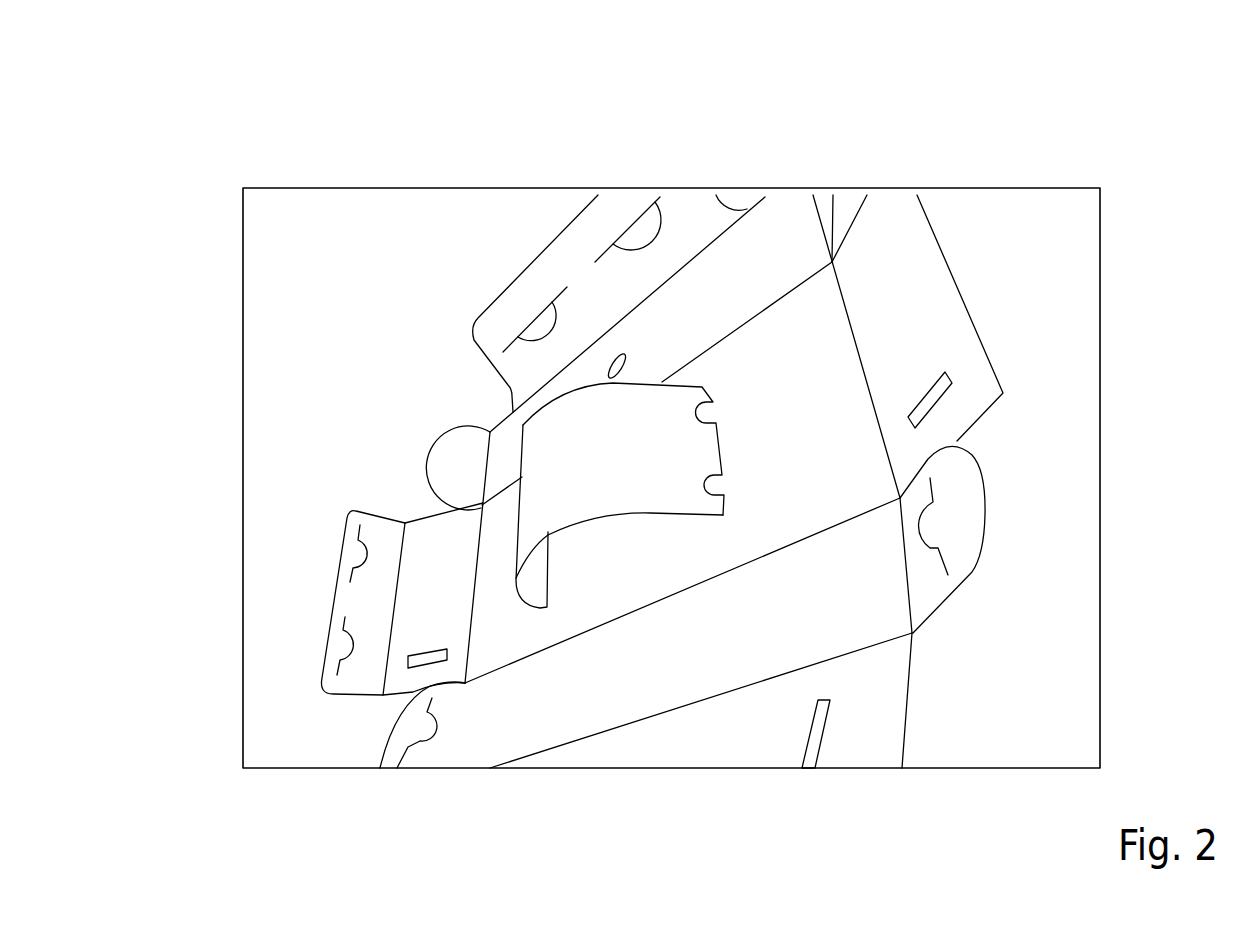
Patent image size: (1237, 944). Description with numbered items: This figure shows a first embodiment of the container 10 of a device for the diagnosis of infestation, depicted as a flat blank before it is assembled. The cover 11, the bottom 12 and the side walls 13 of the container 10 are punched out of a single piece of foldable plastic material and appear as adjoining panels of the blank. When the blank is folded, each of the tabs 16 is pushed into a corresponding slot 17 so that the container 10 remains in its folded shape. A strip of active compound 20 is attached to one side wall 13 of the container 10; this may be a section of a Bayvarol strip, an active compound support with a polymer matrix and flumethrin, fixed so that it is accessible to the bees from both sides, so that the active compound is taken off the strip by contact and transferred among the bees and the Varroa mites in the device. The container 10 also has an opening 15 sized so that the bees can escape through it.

The container 10 is at (309, 157).
The cover 11 is at (734, 287).
The bottom 12 is at (835, 597).
The side wall 13 is at (772, 376).
The opening 15 is at (616, 353).
The tab 16 is at (937, 522).
The slot 17 is at (942, 393).
The strip of active compound 20 is at (603, 454).